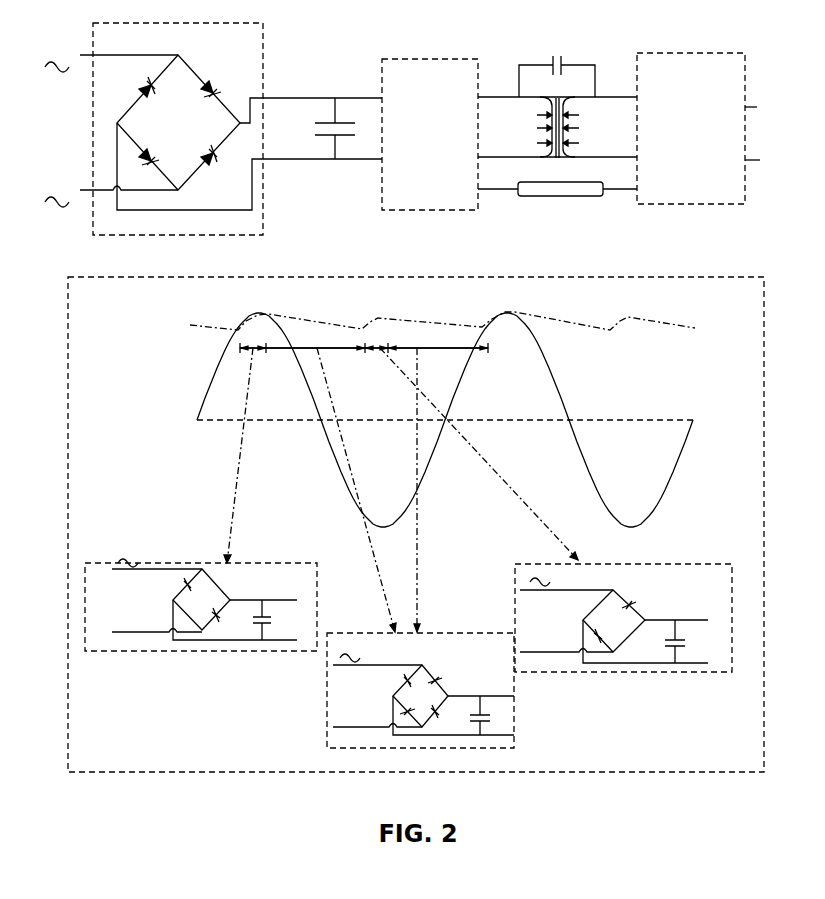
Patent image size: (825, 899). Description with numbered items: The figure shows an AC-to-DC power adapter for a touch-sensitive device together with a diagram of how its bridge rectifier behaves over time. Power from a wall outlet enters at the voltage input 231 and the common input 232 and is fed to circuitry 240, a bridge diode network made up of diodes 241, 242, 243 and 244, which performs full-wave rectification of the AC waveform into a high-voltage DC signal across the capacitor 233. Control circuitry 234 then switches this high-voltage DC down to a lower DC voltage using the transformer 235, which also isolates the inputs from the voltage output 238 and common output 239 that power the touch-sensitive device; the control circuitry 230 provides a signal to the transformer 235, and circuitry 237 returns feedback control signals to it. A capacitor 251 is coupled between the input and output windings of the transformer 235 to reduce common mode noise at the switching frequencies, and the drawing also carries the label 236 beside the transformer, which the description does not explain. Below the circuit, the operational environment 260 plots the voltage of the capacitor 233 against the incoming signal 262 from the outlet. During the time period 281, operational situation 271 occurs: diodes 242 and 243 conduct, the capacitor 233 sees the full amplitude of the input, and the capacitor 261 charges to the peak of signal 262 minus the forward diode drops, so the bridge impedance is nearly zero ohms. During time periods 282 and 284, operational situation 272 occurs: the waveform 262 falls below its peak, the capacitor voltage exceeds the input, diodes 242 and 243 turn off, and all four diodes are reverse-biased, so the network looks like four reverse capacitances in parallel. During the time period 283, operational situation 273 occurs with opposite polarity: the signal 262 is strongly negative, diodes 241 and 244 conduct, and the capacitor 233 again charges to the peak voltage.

The control circuitry 230 is at (414, 23).
The voltage input 231 is at (86, 56).
The common input 232 is at (81, 190).
The capacitor 233 is at (337, 124).
The control circuitry 234 is at (455, 60).
The transformer 235 is at (553, 159).
The transformer secondary winding 236 is at (590, 139).
The circuitry 237 is at (646, 54).
The voltage output 238 is at (750, 106).
The common output 239 is at (752, 159).
The bridge diode network 240 is at (268, 26).
The diode 241 is at (141, 85).
The diode 242 is at (207, 85).
The diode 243 is at (147, 151).
The diode 244 is at (205, 150).
The capacitor 251 is at (519, 64).
The operational environment 260 is at (82, 277).
The capacitor 261 is at (290, 321).
The signal 262 is at (567, 403).
The operational situation 271 is at (255, 563).
The operational situation 272 is at (460, 634).
The operational situation 273 is at (605, 564).
The time period 281 is at (252, 350).
The time period 282 is at (313, 349).
The time period 283 is at (377, 349).
The time period 284 is at (450, 349).